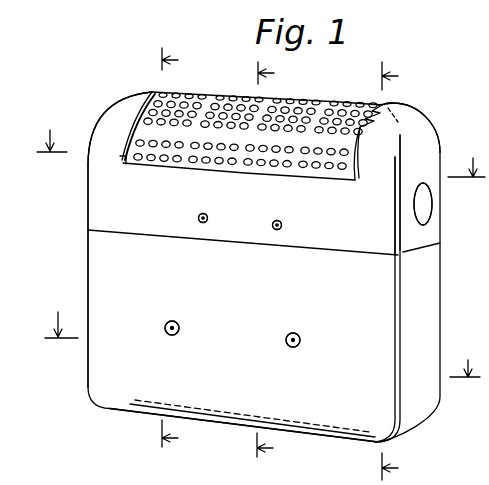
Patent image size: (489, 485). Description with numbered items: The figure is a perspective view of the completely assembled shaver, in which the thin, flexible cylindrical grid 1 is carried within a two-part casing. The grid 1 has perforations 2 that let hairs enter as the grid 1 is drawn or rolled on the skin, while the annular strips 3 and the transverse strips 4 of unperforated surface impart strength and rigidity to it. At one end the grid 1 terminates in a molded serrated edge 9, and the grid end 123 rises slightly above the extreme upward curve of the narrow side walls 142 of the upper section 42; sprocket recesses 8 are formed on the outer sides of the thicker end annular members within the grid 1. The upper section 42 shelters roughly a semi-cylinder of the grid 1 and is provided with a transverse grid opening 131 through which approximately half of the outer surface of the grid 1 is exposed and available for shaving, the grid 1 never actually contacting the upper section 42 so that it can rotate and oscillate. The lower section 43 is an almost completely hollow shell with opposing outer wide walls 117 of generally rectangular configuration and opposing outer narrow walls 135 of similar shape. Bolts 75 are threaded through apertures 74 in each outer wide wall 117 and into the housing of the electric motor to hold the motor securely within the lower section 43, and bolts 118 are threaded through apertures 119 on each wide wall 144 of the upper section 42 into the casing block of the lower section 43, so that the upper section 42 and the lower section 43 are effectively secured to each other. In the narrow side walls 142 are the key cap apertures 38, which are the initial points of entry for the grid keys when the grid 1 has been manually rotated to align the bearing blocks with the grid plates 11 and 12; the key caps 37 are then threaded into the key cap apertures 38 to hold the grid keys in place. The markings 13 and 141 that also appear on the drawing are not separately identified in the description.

The grid 1 is at (334, 98).
The perforations 2 is at (215, 164).
The annular strips 3 is at (190, 164).
The transverse strips 4 is at (157, 131).
The sprocket recesses 8 is at (261, 266).
The serrated edge 9 is at (382, 107).
The grid plate 11 is at (183, 256).
The grid plate 12 is at (402, 273).
The section line 13- 13 is at (278, 265).
The key cap 37 is at (425, 220).
The key cap aperture 38 is at (413, 225).
The upper section 42 is at (132, 225).
The lower section 43 is at (128, 259).
The aperture 74 is at (178, 333).
The bolt 75 is at (178, 324).
The outer wide wall 117 is at (287, 399).
The bolt 118 is at (207, 215).
The aperture 119 is at (207, 221).
The grid end 123 is at (157, 93).
The transverse grid opening 131 is at (123, 162).
The outer narrow wall 135 is at (88, 271).
The opening in end wall 141 is at (427, 207).
The narrow side wall 142 is at (110, 112).
The wide wall 144 is at (368, 206).